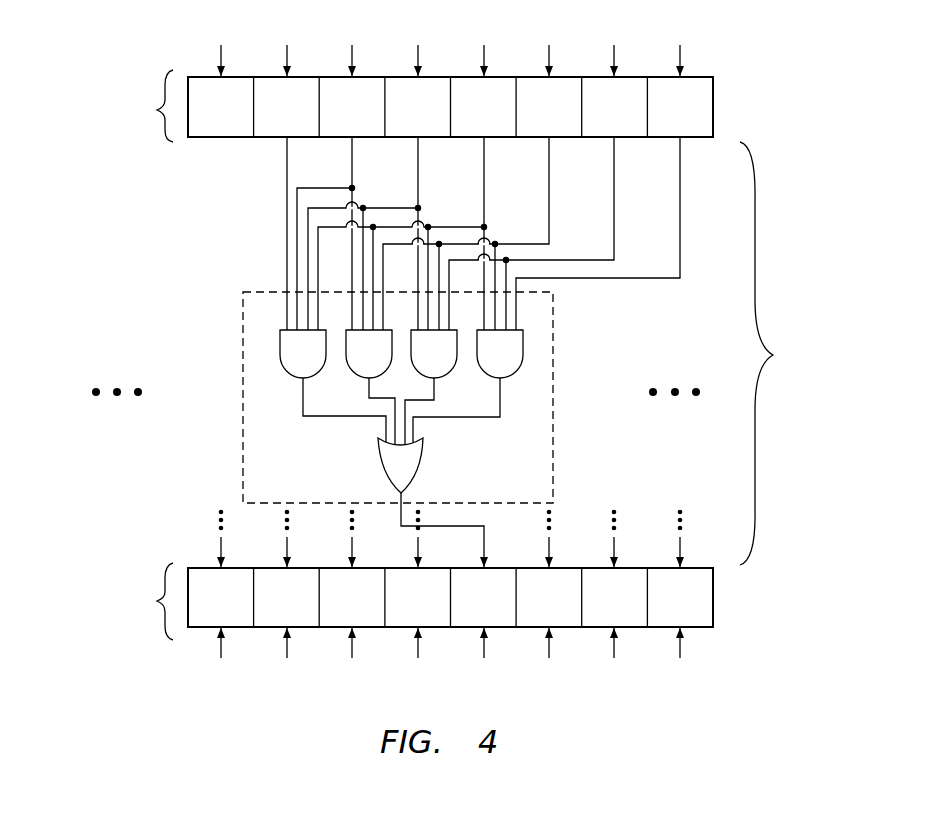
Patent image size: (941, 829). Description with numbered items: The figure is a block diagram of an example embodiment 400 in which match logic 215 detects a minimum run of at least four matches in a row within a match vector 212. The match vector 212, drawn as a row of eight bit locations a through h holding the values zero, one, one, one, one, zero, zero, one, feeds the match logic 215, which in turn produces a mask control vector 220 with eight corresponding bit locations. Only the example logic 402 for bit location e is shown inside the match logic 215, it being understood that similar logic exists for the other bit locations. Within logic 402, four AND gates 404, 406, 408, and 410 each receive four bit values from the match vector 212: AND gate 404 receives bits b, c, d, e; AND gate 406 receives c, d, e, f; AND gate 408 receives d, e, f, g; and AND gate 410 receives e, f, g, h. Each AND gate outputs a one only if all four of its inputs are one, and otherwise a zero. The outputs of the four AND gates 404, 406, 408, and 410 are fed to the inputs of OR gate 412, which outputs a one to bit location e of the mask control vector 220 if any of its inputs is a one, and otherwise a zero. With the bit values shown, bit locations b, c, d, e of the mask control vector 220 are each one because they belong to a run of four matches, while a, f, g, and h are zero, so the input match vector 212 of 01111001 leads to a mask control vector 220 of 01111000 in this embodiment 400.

The example embodiment 400 is at (848, 63).
The match vector 212 is at (163, 145).
The match logic 215 is at (755, 447).
The mask control vector 220 is at (163, 640).
The logic 402 is at (553, 428).
The AND gate 404 is at (287, 374).
The AND gate 406 is at (354, 374).
The AND gate 408 is at (454, 374).
The AND gate 410 is at (518, 374).
The OR gate 412 is at (427, 452).